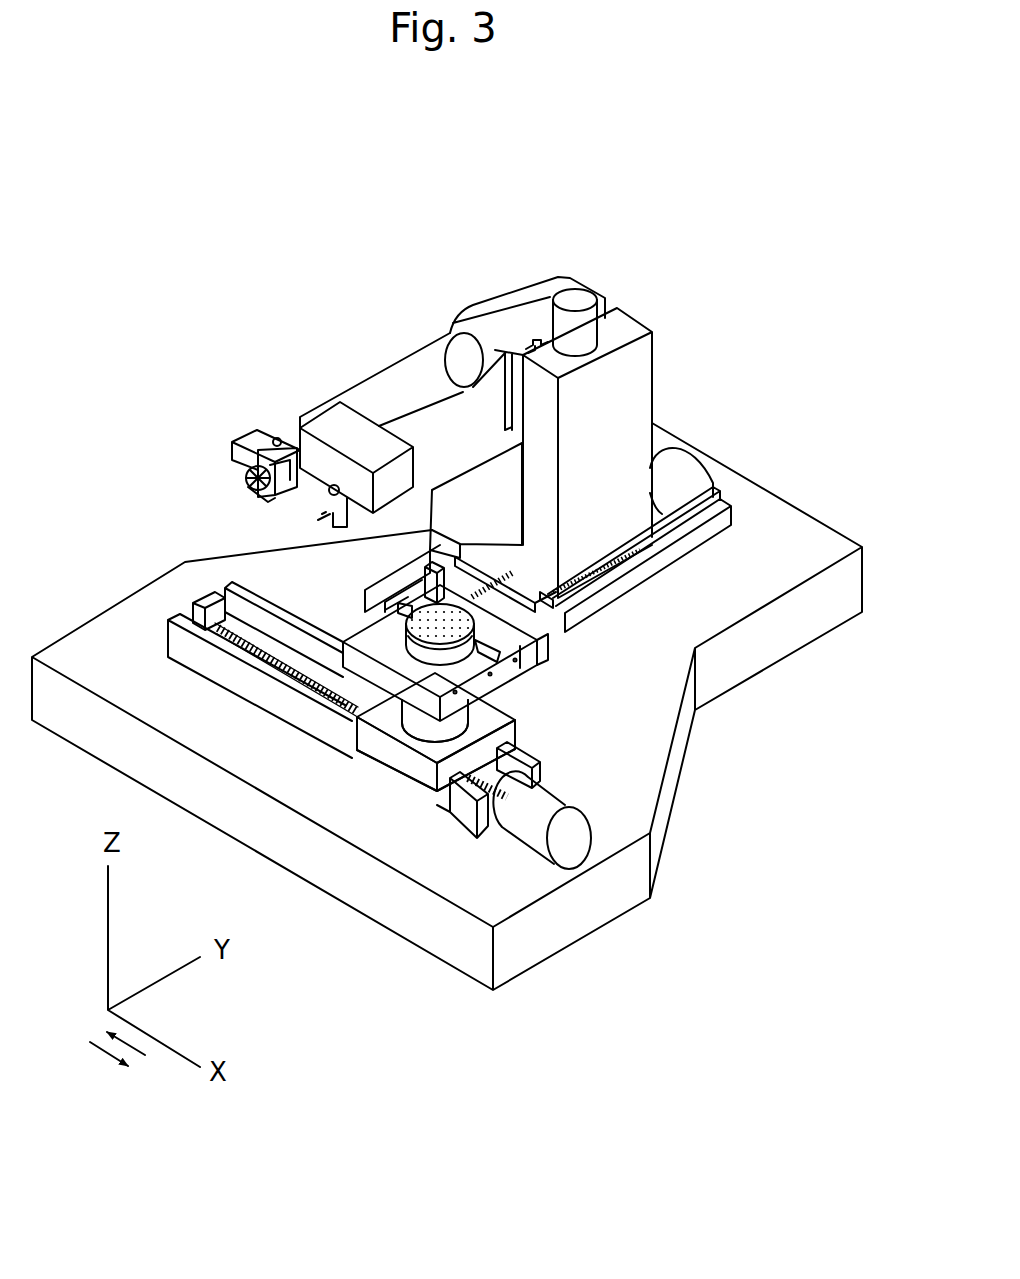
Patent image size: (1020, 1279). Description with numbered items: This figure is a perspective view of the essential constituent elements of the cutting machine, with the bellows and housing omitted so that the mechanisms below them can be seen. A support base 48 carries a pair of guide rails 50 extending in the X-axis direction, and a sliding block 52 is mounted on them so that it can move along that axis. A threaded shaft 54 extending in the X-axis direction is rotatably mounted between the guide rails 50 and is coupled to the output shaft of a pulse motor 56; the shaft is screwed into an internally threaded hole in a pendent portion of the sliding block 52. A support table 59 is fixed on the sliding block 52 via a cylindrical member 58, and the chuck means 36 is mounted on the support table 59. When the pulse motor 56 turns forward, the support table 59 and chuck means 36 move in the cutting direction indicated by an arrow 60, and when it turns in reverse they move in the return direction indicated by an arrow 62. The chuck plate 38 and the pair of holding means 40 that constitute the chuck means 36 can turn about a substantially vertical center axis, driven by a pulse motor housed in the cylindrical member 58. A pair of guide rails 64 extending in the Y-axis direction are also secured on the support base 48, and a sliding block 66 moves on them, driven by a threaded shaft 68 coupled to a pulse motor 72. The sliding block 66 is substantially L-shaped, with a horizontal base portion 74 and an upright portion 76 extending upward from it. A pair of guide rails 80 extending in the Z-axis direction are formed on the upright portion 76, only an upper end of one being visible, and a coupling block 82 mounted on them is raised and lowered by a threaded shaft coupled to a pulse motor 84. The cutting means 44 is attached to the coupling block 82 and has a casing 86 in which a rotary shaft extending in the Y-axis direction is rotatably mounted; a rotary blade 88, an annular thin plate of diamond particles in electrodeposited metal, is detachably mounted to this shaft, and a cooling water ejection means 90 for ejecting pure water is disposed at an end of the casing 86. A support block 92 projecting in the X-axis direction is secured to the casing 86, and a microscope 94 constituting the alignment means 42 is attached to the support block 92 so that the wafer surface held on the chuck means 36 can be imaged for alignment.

The chuck means 36 is at (437, 690).
The chuck plate 38 is at (400, 625).
The pair of holding means 40 is at (402, 578).
The alignment means 42 is at (322, 514).
The cutting means 44 is at (222, 473).
The support base 48 is at (676, 796).
The pair of guide rails 50 is at (230, 666).
The sliding block 52 is at (407, 763).
The threaded shaft 54 is at (307, 693).
The pulse motor 56 is at (560, 793).
The cylindrical member 58 is at (470, 705).
The support table 59 is at (352, 708).
The arrow 60 is at (133, 1052).
The arrow 62 is at (102, 1053).
The pair of guide rails 64 is at (413, 597).
The sliding block 66 is at (658, 399).
The threaded shaft 68 is at (500, 636).
The pulse motor 72 is at (688, 462).
The horizontal base portion 74 is at (497, 466).
The upright portion 76 is at (640, 382).
The pair of guide rails 80 is at (535, 344).
The coupling block 82 is at (460, 320).
The pulse motor 84 is at (584, 298).
The casing 86 is at (365, 393).
The rotary blade 88 is at (252, 481).
The cooling water ejection means 90 is at (272, 500).
The support block 92 is at (370, 417).
The microscope 94 is at (320, 520).